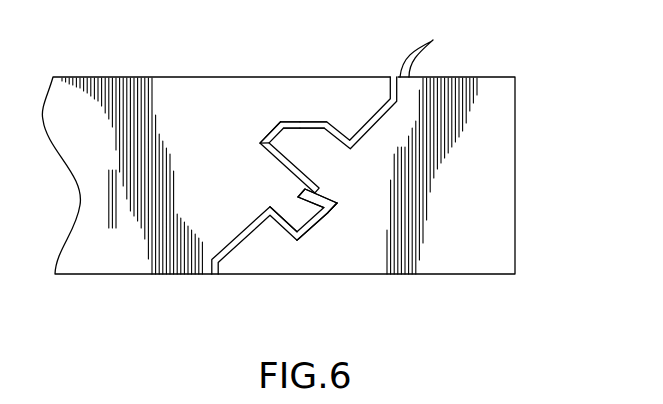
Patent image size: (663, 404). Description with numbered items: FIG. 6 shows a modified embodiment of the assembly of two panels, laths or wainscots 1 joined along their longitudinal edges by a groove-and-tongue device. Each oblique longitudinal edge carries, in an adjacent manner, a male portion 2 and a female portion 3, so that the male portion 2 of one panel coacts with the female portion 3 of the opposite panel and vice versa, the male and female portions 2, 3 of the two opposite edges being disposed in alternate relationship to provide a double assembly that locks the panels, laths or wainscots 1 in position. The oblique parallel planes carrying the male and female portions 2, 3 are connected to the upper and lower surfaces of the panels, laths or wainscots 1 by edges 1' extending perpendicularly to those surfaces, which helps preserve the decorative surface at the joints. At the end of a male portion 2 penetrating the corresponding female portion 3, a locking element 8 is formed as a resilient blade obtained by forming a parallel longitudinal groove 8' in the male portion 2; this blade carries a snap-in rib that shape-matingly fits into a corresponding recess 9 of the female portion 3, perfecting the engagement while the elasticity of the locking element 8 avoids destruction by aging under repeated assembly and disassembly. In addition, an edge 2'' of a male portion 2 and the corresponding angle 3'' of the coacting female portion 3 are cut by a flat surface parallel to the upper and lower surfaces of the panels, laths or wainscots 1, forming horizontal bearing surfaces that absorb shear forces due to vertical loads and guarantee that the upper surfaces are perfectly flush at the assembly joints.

The panel, lath or wainscot 1 is at (304, 149).
The edge 1' is at (429, 48).
The male portion 2 is at (295, 197).
The edge of male portion 2'' is at (314, 78).
The female portion 3 is at (244, 227).
The angle of female portion 3'' is at (281, 78).
The locking element 8 is at (389, 221).
The parallel longitudinal groove 8' is at (344, 257).
The recess 9 is at (313, 195).